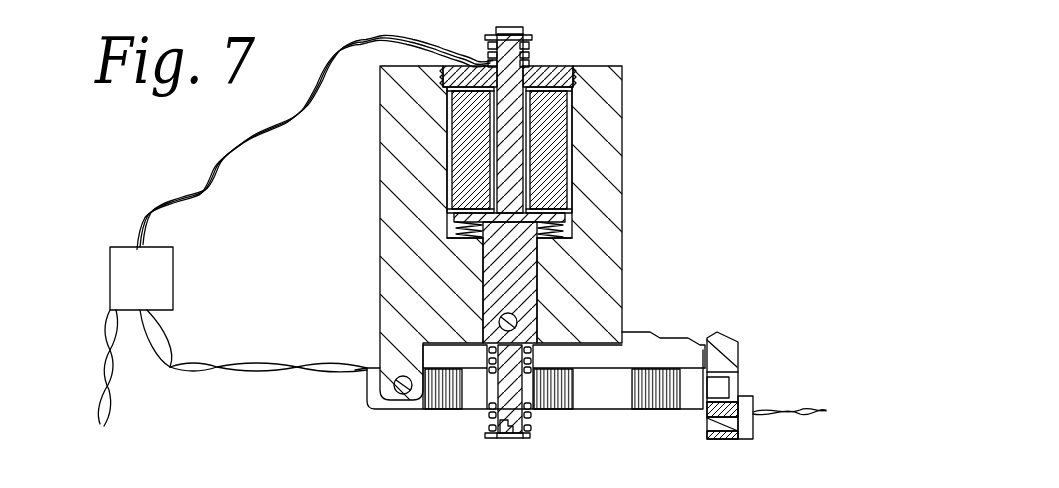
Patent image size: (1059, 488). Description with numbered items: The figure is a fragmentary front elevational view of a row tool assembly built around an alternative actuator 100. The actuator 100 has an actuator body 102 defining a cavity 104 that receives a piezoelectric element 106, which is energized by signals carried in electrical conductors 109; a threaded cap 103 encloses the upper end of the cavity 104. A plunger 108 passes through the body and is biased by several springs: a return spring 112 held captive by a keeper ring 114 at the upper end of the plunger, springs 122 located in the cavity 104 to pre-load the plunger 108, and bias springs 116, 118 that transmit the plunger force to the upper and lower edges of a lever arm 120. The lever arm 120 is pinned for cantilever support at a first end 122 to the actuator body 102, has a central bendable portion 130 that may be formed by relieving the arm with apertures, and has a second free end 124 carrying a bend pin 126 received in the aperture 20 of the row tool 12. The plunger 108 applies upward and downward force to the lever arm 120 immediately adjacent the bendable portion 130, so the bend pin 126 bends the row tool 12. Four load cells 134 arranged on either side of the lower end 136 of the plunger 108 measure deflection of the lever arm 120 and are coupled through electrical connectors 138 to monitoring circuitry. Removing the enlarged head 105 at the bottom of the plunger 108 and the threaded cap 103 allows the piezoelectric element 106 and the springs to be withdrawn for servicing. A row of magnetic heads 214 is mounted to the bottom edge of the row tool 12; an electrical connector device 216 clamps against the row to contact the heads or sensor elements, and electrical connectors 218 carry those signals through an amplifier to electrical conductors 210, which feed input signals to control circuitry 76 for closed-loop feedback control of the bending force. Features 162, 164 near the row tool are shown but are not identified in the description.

The actuator 100 is at (625, 74).
The actuator body 102 is at (398, 140).
The threaded cap 103 is at (575, 67).
The cavity 104 is at (567, 135).
The enlarged head 105 is at (525, 437).
The piezoelectric element 106 is at (567, 137).
The plunger 108 is at (540, 258).
The electrical conductors 109 is at (207, 180).
The return spring 112 is at (532, 58).
The keeper ring 114 is at (527, 30).
The bias spring 116 is at (540, 315).
The bias spring 118 is at (533, 420).
The lever arm 120 is at (460, 397).
The springs 122 is at (457, 232).
The second free end 124 is at (690, 345).
The bend pin 126 is at (720, 387).
The central bendable portion 130 is at (627, 400).
The load cells 134 is at (488, 366).
The lower end 136 is at (508, 433).
The electrical connectors 138 is at (267, 362).
The row tool 12 is at (735, 347).
The aperture 20 is at (738, 373).
The control circuitry 76 is at (118, 247).
The electrical conductors 210 is at (107, 387).
The row of magnetic heads 214 is at (733, 442).
The electrical connector device 216 is at (750, 402).
The electrical connectors 218 is at (817, 416).
The member 162 is at (633, 482).
The member 164 is at (677, 482).